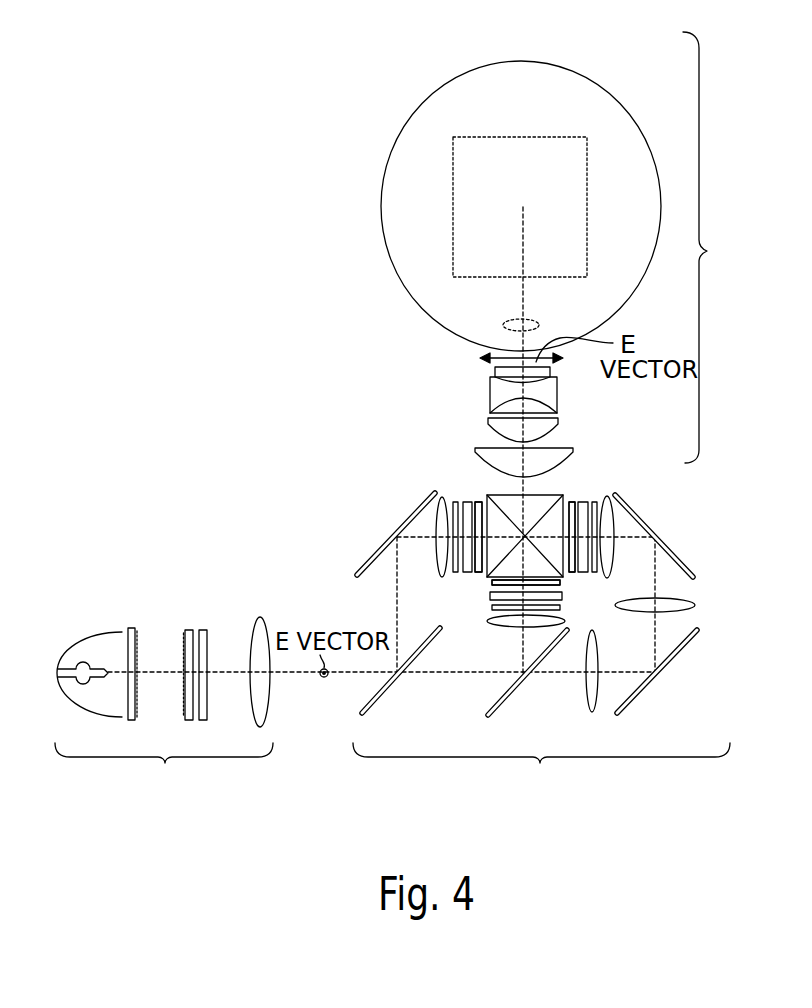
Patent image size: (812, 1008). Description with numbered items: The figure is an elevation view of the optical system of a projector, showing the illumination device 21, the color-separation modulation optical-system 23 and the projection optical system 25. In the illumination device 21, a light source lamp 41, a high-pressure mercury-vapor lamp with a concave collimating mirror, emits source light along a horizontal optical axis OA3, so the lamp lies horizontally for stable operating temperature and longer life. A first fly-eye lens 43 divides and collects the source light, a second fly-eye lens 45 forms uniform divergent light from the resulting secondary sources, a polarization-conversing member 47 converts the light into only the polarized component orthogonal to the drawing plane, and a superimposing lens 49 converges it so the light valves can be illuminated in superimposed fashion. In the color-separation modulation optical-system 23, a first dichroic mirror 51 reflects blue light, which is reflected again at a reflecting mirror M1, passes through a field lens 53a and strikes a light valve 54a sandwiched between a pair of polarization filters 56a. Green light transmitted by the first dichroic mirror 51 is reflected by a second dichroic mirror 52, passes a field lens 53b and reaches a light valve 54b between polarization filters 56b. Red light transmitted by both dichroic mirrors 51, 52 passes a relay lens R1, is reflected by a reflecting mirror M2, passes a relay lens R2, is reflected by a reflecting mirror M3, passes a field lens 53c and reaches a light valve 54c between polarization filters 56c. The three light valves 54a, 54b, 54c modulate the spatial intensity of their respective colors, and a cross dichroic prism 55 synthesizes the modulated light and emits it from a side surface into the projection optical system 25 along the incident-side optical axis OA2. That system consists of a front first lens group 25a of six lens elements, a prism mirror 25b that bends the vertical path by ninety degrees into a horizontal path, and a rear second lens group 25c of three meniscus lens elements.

The illumination device 21 is at (164, 769).
The color-separation modulation optical-system 23 is at (541, 769).
The projection optical system 25 is at (714, 247).
The first lens group 25a is at (478, 423).
The prism mirror 25b is at (562, 137).
The second lens group 25c is at (397, 131).
The incident-side optical axis OA2 is at (515, 303).
The optical axis of the illumination device OA3 is at (298, 674).
The light source lamp 41 is at (80, 640).
The first fly-eye lens 43 is at (130, 628).
The second fly-eye lens 45 is at (188, 630).
The polarization-conversing member 47 is at (203, 630).
The superimposing lens 49 is at (262, 617).
The first dichroic mirror 51 is at (396, 683).
The second dichroic mirror 52 is at (527, 685).
The field lens 53a is at (437, 500).
The field lens 53b is at (504, 628).
The field lens 53c is at (622, 503).
The light valve 54a is at (467, 502).
The light valve 54b is at (490, 598).
The light valve 54c is at (583, 500).
The cross dichroic prism 55 is at (565, 492).
The pair of polarization filters 56a is at (482, 572).
The pair of polarization filters 56b is at (557, 583).
The pair of polarization filters 56c is at (572, 570).
The reflecting mirror M1 is at (376, 550).
The reflecting mirror M2 is at (683, 650).
The reflecting mirror M3 is at (694, 572).
The relay lens R1 is at (587, 687).
The relay lens R2 is at (695, 605).